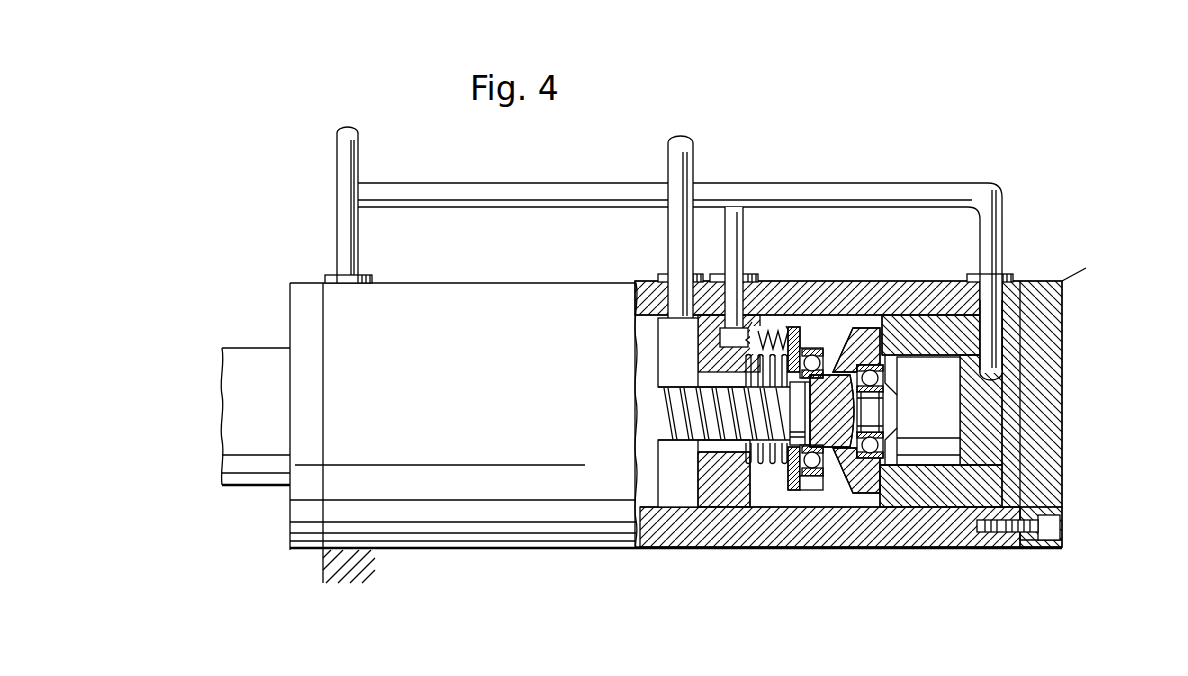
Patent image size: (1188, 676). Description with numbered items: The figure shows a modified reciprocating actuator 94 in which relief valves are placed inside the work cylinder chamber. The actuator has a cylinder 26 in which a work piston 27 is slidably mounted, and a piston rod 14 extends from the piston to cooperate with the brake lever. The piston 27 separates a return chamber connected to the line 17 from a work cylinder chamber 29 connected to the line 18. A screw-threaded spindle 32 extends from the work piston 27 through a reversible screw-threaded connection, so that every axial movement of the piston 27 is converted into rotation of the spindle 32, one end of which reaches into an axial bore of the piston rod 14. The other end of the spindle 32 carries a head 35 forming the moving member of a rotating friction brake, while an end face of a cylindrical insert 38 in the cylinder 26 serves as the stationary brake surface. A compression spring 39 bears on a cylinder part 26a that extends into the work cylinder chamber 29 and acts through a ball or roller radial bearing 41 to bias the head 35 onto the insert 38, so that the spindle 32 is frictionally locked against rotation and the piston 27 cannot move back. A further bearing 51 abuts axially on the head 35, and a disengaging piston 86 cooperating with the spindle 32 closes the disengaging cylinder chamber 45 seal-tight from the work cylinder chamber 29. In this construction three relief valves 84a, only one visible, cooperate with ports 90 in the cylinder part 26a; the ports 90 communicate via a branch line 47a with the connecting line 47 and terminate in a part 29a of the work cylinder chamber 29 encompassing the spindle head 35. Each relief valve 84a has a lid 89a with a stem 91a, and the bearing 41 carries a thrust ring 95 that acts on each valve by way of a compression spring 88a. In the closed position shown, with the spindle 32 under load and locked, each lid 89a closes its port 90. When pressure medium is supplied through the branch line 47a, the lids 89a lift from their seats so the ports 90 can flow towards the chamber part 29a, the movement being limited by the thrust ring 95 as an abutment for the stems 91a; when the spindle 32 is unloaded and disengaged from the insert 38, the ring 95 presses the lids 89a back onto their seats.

The piston rod 14 is at (244, 487).
The line 17 is at (349, 163).
The line 18 is at (680, 163).
The cylinder 26 is at (386, 522).
The cylinder part 26a is at (722, 482).
The work piston 27 is at (640, 458).
The work cylinder chamber 29 is at (678, 505).
The part of the work cylinder chamber 29a is at (760, 500).
The screw-threaded spindle 32 is at (672, 443).
The head 35 is at (870, 495).
The cylindrical insert 38 is at (942, 493).
The compression spring 39 is at (778, 470).
The ball or roller radial bearing 41 is at (814, 476).
The disengaging cylinder chamber 45 is at (994, 412).
The connecting line 47 is at (994, 228).
The branch line 47a is at (738, 229).
The bearing 51 is at (887, 470).
The relief valve 84a is at (775, 310).
The disengaging piston 86 is at (942, 410).
The compression spring 88a is at (787, 326).
The lid 89a is at (752, 322).
The ports 90 is at (735, 340).
The stem 91a is at (799, 336).
The reciprocating actuator 94 is at (1085, 269).
The thrust ring 95 is at (797, 493).